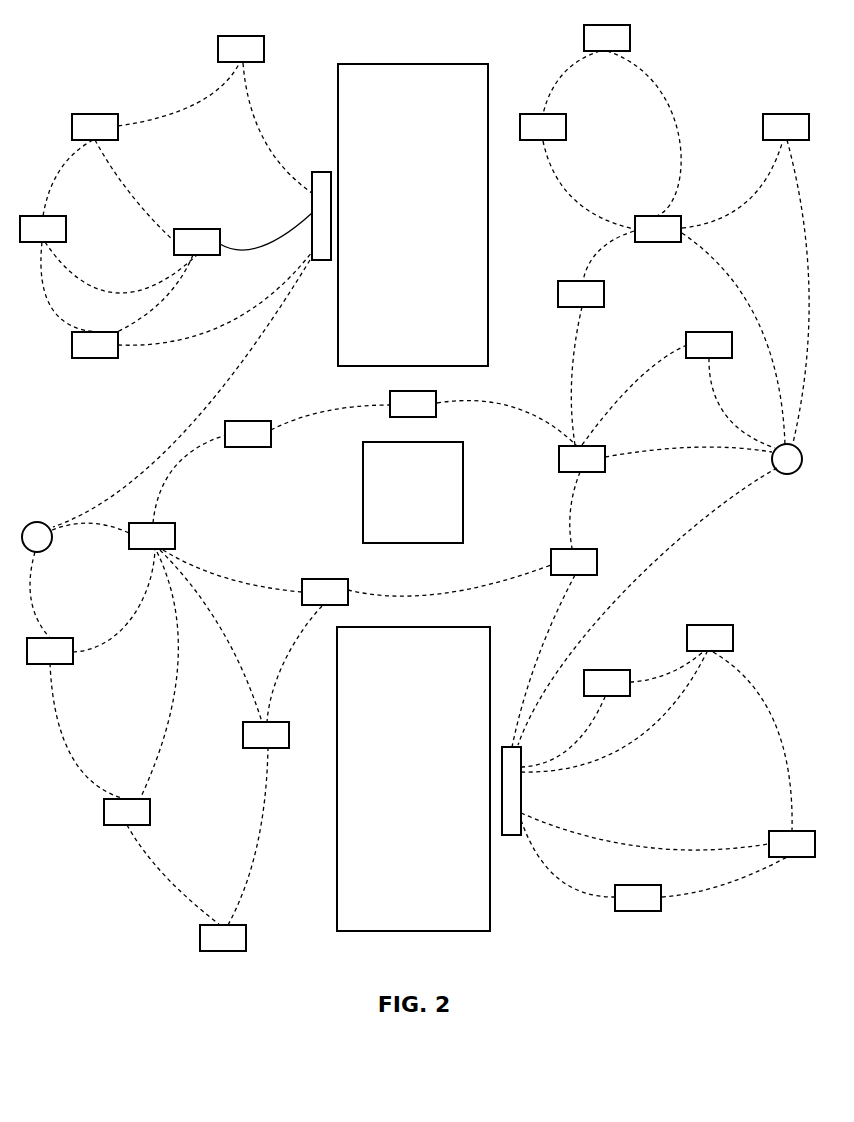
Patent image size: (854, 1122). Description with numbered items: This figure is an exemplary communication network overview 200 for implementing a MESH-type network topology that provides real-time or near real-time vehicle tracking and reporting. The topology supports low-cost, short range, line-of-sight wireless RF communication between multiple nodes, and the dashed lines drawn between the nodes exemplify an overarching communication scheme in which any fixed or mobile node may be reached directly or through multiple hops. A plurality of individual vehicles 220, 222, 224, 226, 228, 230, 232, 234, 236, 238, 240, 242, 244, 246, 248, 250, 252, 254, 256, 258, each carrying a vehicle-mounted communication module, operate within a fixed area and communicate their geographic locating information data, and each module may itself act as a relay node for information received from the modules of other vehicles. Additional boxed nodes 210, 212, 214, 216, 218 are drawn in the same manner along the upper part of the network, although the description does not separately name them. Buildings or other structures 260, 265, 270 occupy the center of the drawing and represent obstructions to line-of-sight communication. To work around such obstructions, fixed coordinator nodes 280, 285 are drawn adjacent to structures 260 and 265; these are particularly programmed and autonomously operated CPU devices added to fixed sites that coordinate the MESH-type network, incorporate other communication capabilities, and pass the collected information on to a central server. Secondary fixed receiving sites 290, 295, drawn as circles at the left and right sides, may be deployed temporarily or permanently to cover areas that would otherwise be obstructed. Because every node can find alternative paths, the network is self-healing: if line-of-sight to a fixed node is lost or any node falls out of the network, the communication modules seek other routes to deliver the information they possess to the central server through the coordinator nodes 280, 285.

The communication network overview 200 is at (72, 67).
The network node 210 is at (241, 49).
The network node 212 is at (607, 38).
The network node 214 is at (95, 127).
The network node 216 is at (543, 127).
The network node 218 is at (786, 127).
The vehicle 220 is at (43, 229).
The vehicle 222 is at (197, 242).
The vehicle 224 is at (658, 229).
The vehicle 226 is at (581, 294).
The vehicle 228 is at (95, 345).
The vehicle 230 is at (709, 345).
The vehicle 232 is at (413, 404).
The vehicle 234 is at (248, 434).
The vehicle 236 is at (582, 459).
The vehicle 238 is at (152, 536).
The vehicle 240 is at (574, 562).
The vehicle 242 is at (325, 592).
The vehicle 244 is at (50, 651).
The vehicle 246 is at (710, 638).
The vehicle 248 is at (607, 683).
The vehicle 250 is at (266, 735).
The vehicle 252 is at (127, 812).
The vehicle 254 is at (792, 844).
The vehicle 256 is at (638, 898).
The vehicle 258 is at (223, 938).
The structure 260 is at (413, 215).
The structure 265 is at (413, 779).
The structure 270 is at (413, 492).
The fixed coordinator node 280 is at (312, 210).
The fixed coordinator node 285 is at (510, 792).
The secondary fixed receiving site 290 is at (40, 540).
The secondary fixed receiving site 295 is at (785, 462).